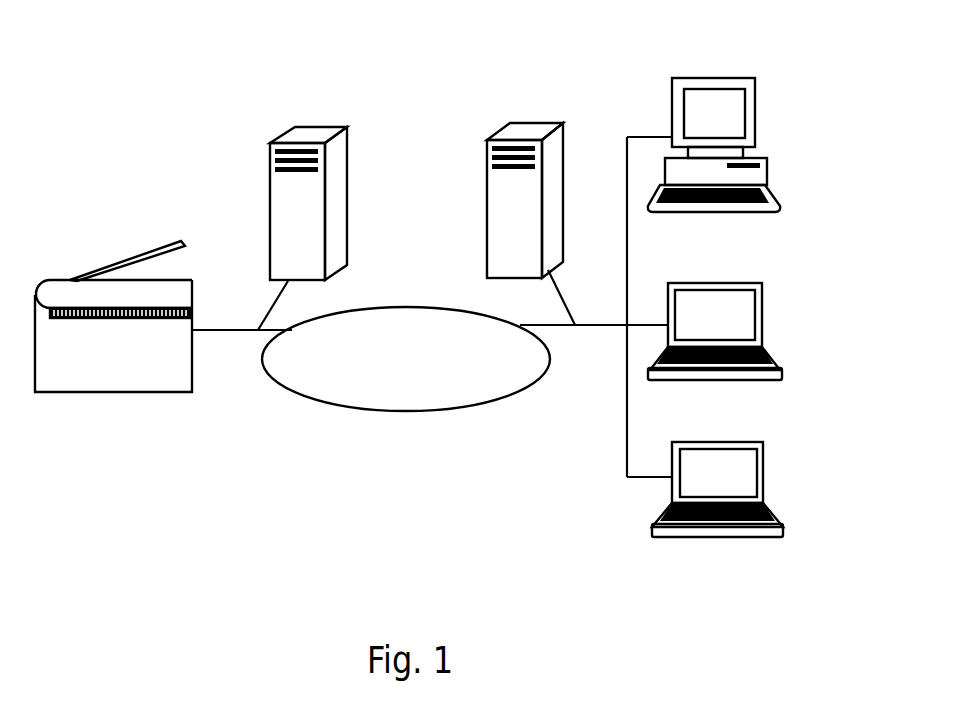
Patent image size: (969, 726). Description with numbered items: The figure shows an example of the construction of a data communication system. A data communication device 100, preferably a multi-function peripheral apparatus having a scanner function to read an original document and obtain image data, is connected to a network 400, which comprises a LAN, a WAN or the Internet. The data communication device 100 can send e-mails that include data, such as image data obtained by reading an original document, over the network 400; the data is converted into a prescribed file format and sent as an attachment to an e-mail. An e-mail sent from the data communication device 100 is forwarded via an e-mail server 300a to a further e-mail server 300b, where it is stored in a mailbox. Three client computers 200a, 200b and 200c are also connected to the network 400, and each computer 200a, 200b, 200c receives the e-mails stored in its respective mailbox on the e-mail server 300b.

The data communication device 100 is at (70, 280).
The computer (client) 200a is at (720, 78).
The computer (client) 200b is at (727, 382).
The computer (client) 200c is at (728, 540).
The e-mail server 300a is at (300, 128).
The e-mail server 300b is at (520, 125).
The network 400 is at (400, 412).